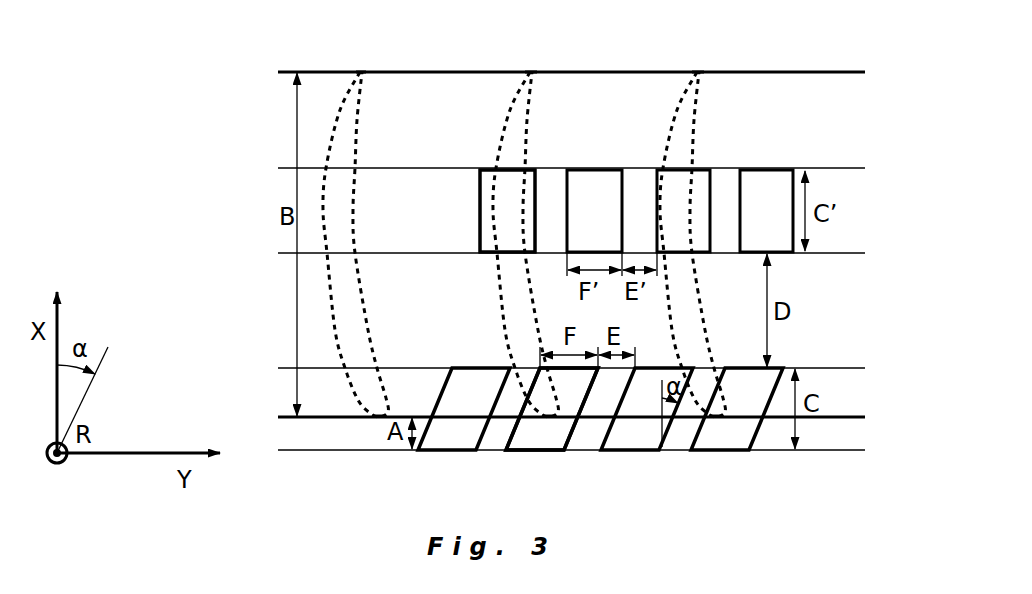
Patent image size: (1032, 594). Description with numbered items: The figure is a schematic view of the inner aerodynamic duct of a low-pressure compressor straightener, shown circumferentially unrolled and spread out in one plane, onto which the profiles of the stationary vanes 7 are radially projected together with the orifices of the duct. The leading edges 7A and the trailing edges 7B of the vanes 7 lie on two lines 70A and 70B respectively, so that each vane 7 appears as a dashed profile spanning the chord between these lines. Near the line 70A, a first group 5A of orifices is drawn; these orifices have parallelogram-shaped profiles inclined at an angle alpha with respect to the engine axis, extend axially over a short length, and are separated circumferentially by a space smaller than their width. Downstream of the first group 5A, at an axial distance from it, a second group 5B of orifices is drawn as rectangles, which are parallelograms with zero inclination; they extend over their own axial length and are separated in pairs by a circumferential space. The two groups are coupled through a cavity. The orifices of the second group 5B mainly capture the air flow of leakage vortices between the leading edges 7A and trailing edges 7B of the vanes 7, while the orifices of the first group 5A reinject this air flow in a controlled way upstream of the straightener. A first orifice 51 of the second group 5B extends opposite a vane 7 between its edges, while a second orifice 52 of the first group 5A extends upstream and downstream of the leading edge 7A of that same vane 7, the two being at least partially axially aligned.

The vane 7 is at (342, 128).
The leading edge 7A is at (371, 419).
The trailing edge 7B is at (361, 71).
The first group of orifices 5A is at (446, 452).
The second group of orifices 5B is at (767, 168).
The first orifice 51 is at (512, 232).
The second orifice 52 is at (575, 395).
The line of the leading edges 70A is at (838, 416).
The line of the trailing edges 70B is at (837, 73).